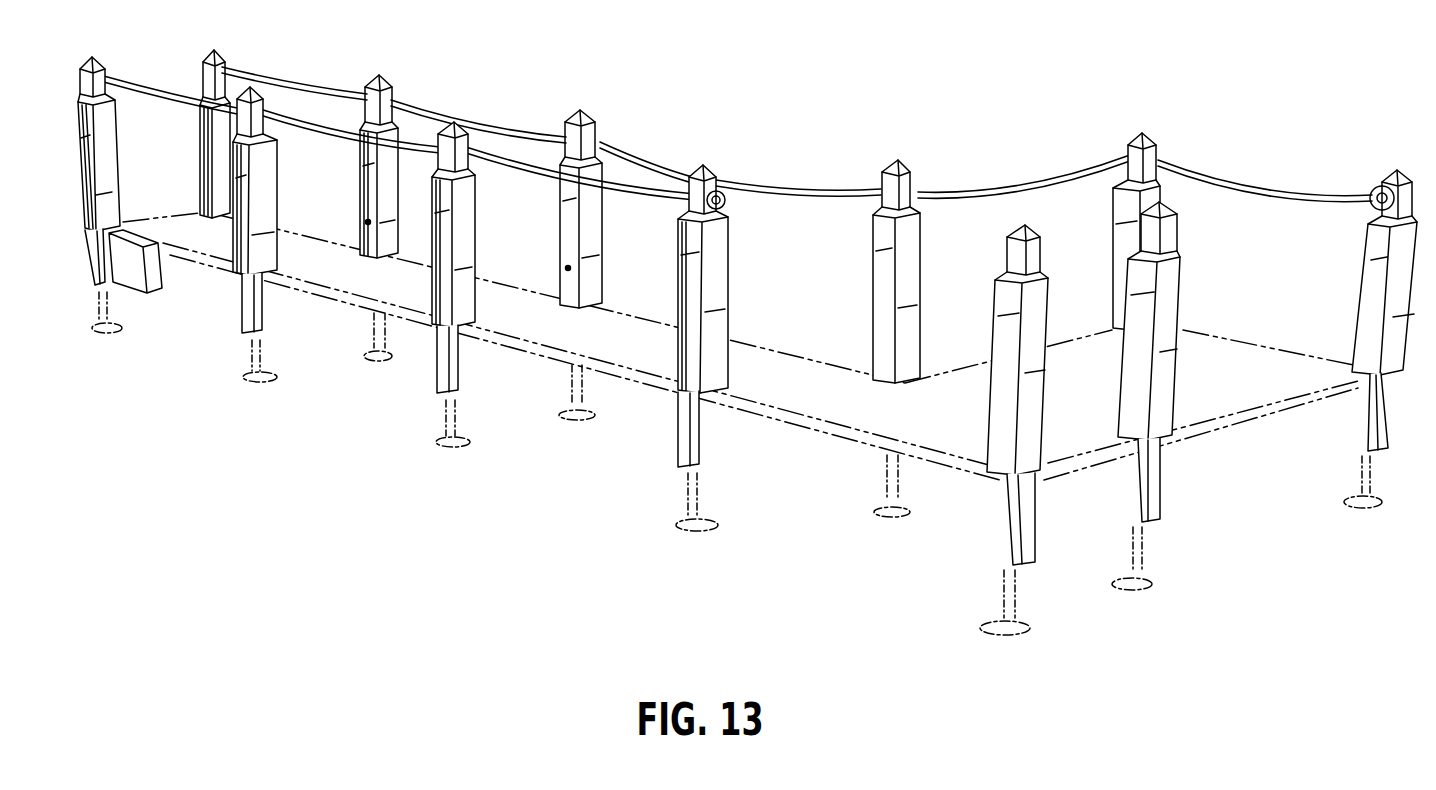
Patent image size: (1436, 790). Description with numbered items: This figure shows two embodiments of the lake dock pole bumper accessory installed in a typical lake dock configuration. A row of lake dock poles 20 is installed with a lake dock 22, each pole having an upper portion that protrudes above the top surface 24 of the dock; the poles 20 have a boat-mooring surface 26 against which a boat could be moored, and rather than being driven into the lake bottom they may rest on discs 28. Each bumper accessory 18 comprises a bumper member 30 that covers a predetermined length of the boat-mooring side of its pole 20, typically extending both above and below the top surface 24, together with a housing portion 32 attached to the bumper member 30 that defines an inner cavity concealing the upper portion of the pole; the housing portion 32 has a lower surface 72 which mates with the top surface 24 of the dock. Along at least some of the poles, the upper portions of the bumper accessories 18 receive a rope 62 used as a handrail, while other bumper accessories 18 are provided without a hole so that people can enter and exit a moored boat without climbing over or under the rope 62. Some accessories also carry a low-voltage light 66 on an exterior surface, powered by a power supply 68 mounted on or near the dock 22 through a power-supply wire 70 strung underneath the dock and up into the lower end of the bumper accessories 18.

The bumper accessory 18 is at (744, 297).
The lake dock pole 20 is at (705, 500).
The lake dock 22 is at (1262, 415).
The top surface of the lake dock 24 is at (1224, 370).
The boat-mooring surface 26 is at (1142, 574).
The disc 28 is at (1025, 636).
The bumper member 30 is at (440, 363).
The housing portion 32 is at (470, 214).
The rope 62 is at (1000, 189).
The light 66 is at (570, 269).
The power supply 68 is at (128, 281).
The power-supply wire 70 is at (181, 258).
The lower surface of housing portion 72 is at (910, 380).